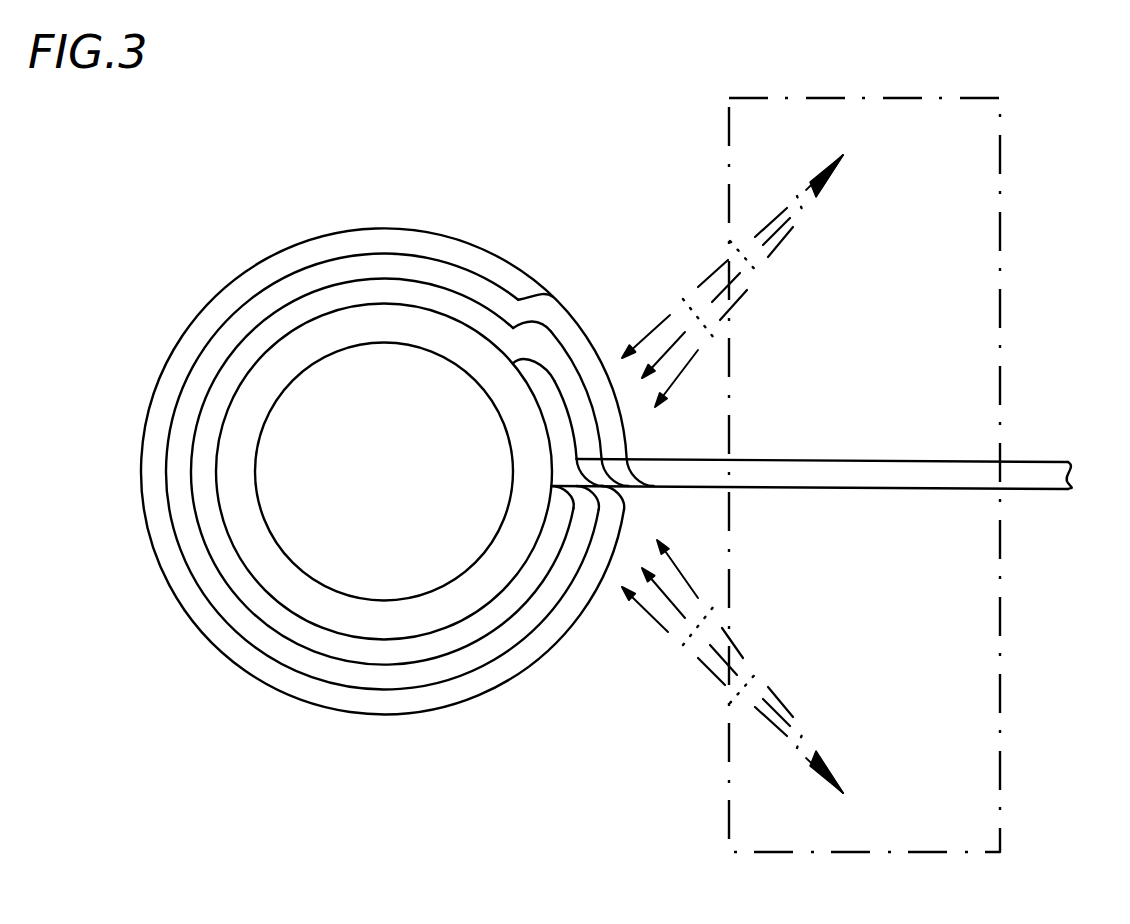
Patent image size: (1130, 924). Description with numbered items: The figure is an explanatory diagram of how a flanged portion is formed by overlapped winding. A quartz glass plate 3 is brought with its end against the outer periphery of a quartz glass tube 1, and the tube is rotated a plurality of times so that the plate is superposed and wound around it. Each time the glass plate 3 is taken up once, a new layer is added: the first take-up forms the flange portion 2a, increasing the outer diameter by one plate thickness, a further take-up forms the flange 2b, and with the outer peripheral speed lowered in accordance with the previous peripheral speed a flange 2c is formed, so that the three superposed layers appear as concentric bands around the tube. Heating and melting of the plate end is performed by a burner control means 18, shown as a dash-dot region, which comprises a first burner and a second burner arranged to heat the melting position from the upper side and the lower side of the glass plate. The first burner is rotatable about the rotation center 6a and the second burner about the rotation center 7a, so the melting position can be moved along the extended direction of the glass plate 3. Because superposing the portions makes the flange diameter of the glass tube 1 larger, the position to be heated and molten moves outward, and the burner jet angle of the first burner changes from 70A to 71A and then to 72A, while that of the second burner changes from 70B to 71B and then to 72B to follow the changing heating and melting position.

The quartz glass tube 1 is at (293, 593).
The flange portion 2a is at (418, 650).
The flange 2b is at (460, 663).
The flange 2c is at (538, 640).
The quartz glass plate 3 is at (1025, 468).
The rotation center 6a is at (843, 155).
The rotation center 7a is at (843, 793).
The burner control means 18 is at (1002, 205).
The burner jet angle 70A is at (706, 279).
The burner jet angle 71A is at (670, 347).
The burner jet angle 72A is at (686, 370).
The burner jet angle 70B is at (655, 622).
The burner jet angle 71B is at (723, 660).
The burner jet angle 72B is at (738, 647).